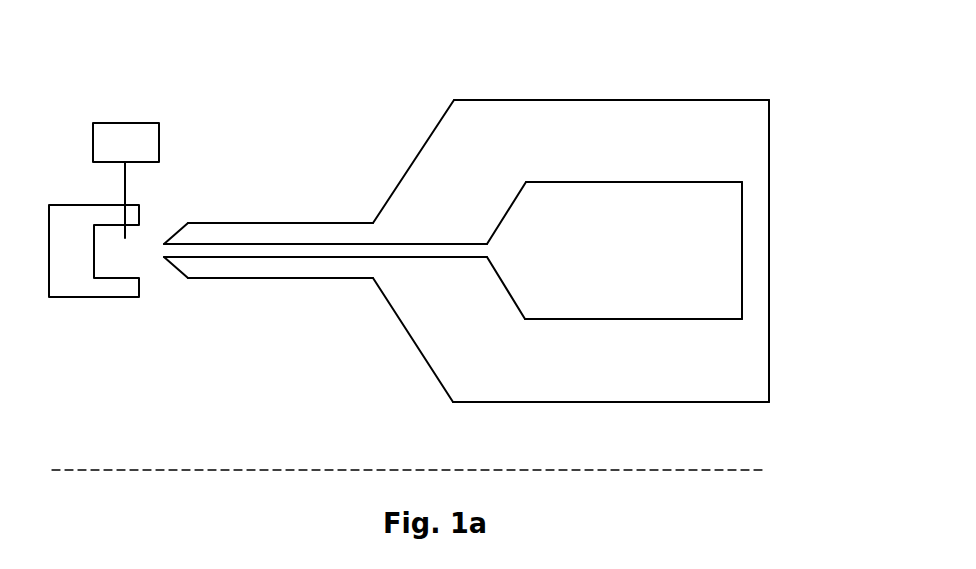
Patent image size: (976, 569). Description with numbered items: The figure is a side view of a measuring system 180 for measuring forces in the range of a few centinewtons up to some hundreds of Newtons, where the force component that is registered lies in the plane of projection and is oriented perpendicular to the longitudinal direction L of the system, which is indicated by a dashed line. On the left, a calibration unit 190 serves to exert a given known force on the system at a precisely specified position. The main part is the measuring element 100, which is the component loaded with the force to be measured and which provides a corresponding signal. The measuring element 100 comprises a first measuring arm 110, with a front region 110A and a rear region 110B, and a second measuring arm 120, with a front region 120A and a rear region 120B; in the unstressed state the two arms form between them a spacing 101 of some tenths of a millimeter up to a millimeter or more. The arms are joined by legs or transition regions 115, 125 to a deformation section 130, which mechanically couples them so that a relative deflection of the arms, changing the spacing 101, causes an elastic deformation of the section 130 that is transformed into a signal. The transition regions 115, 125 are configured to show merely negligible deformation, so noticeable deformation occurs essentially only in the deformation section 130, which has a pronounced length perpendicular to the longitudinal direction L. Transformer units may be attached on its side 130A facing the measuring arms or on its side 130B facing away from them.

The measuring element 100 is at (711, 68).
The spacing 101 is at (237, 253).
The first measuring arm 110 is at (287, 213).
The front region 110A is at (218, 223).
The rear region 110B is at (327, 222).
The transition region 115 is at (552, 91).
The second measuring arm 120 is at (288, 289).
The front region 120A is at (188, 278).
The rear region 120B is at (327, 280).
The transition region 125 is at (641, 384).
The deformation section 130 is at (808, 202).
The side facing the measuring arms 130A is at (732, 229).
The side facing away from the measuring arms 130B is at (782, 167).
The measuring system 180 is at (291, 76).
The calibration unit 190 is at (59, 169).
The longitudinal direction L is at (133, 470).